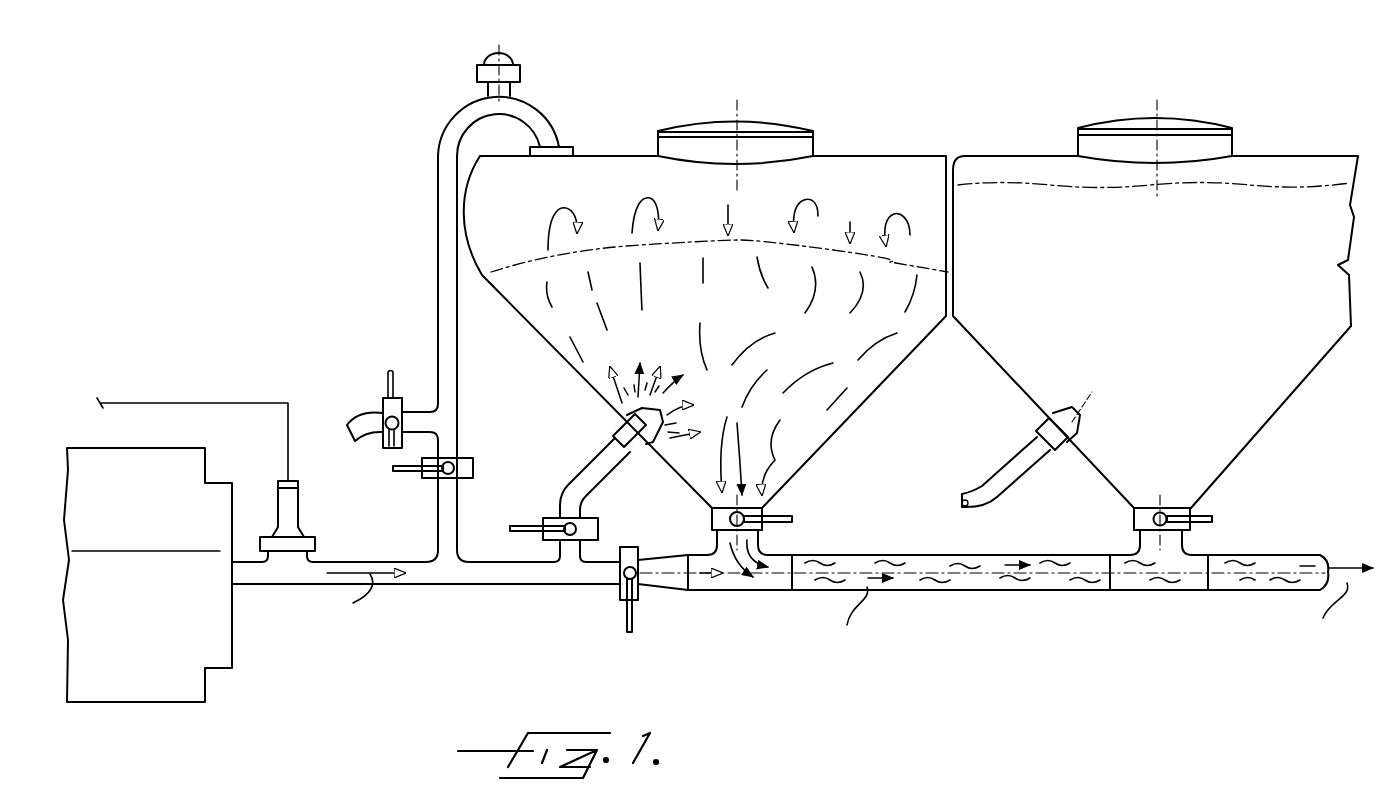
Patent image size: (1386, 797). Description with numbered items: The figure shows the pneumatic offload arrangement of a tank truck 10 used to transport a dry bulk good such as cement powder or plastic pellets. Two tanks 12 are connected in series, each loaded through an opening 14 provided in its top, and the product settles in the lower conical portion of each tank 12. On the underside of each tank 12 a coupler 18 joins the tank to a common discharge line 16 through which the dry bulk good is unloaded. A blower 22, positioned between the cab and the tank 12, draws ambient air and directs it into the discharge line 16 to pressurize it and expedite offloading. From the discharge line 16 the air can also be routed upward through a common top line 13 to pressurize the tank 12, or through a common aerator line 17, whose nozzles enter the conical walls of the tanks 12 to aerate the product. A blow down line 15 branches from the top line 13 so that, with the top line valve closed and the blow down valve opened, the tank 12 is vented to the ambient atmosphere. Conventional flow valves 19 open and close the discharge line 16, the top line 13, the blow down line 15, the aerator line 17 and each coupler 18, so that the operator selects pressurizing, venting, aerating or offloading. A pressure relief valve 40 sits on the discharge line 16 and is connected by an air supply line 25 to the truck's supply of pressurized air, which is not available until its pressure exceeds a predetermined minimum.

The tank truck 10 is at (945, 110).
The tank 12 is at (798, 209).
The top line 13 is at (453, 122).
The opening 14 is at (703, 120).
The blow down line 15 is at (353, 422).
The discharge line 16 is at (462, 585).
The aerator line 17 is at (613, 462).
The coupler 18 is at (728, 591).
The flow valve 19 is at (468, 462).
The blower 22 is at (172, 603).
The air supply line 25 is at (170, 400).
The pressure relief valve 40 is at (298, 507).